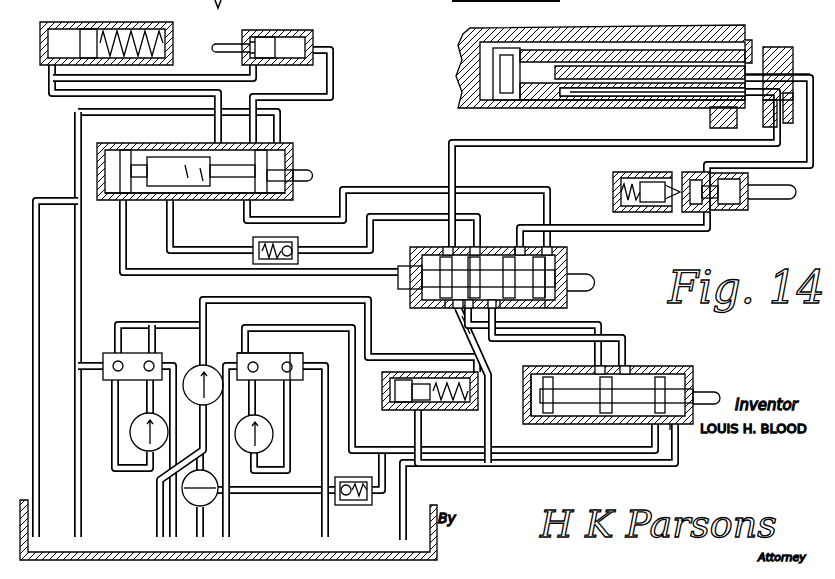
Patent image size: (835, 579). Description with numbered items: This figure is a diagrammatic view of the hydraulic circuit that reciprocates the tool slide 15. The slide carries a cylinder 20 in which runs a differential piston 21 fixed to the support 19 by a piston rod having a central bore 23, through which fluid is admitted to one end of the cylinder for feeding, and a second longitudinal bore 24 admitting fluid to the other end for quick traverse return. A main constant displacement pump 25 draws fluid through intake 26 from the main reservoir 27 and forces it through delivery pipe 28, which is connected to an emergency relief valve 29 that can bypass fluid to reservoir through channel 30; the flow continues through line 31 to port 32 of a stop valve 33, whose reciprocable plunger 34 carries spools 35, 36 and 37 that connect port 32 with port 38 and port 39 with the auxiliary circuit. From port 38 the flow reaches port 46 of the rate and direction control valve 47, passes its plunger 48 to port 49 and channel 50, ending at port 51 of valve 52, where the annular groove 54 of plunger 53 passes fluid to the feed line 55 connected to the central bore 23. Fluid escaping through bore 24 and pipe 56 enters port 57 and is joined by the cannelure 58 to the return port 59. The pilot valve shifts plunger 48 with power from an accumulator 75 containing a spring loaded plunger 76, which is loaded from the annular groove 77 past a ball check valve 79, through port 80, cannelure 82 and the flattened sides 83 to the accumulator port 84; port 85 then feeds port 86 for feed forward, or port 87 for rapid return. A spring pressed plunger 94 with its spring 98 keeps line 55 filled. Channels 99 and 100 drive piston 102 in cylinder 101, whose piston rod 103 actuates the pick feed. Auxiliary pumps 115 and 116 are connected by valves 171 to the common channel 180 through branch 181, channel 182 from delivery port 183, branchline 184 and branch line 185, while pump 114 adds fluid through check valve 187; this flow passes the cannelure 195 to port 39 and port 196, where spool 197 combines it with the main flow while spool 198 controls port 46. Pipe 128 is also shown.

The slide 15 is at (458, 104).
The support 19 is at (785, 50).
The cylinder 20 is at (552, 108).
The differential piston 21 is at (500, 102).
The central bore 23 is at (757, 78).
The second longitudinal bore 24 is at (640, 92).
The main constant displacement pump 25 is at (200, 363).
The intake 26 is at (158, 487).
The main reservoir 27 is at (431, 505).
The delivery pipe 28 is at (280, 300).
The emergency relief valve 29 is at (372, 355).
The channel 30 is at (422, 430).
The line 31 is at (428, 358).
The port 32 is at (523, 380).
The stop valve 33 is at (690, 366).
The reciprocable plunger 34 is at (713, 392).
The spool 35 is at (543, 393).
The spool 36 is at (605, 418).
The spool 37 is at (660, 366).
The port 38 is at (597, 366).
The port 39 is at (626, 366).
The port 46 is at (466, 328).
The rate and direction control valve 47 is at (545, 310).
The plunger 48 is at (580, 278).
The port 49 is at (516, 229).
The channel 50 is at (630, 228).
The port 51 is at (722, 212).
The valve 52 is at (750, 212).
The plunger 53 is at (767, 200).
The annular groove 54 is at (703, 173).
The feed line 55 is at (802, 165).
The pipe 56 is at (702, 142).
The port 57 is at (445, 248).
The cannelure 58 is at (410, 273).
The return port 59 is at (462, 320).
The accumulator 75 is at (55, 22).
The spring loaded plunger 76 is at (90, 40).
The annular groove 77 is at (466, 247).
The ball check valve 79 is at (253, 245).
The port 80 is at (172, 203).
The cannelure 82 is at (156, 148).
The flattened sides 83 is at (184, 204).
The port 84 is at (53, 84).
The port 85 is at (292, 222).
The port 86 is at (548, 242).
The port 87 is at (122, 226).
The spring pressed plunger 94 is at (656, 173).
The spring 98 is at (618, 192).
The channel 99 is at (255, 78).
The channel 100 is at (332, 80).
The cylinder 101 is at (305, 32).
The piston 102 is at (266, 38).
The piston rod 103 is at (238, 42).
The pump 114 is at (212, 500).
The auxiliary pump 115 is at (273, 435).
The pump 116 is at (143, 450).
The conduit 128 is at (503, 9).
The valve 171 is at (103, 356).
The common channel 180 is at (533, 447).
The branch 181 is at (247, 348).
The channel 182 is at (253, 395).
The delivery port 183 is at (253, 408).
The branchline 184 is at (298, 348).
The branch line 185 is at (290, 458).
The check valve 187 is at (343, 505).
The cannelure 195 is at (630, 424).
The port 196 is at (508, 310).
The spool 197 is at (474, 250).
The spool 198 is at (445, 310).